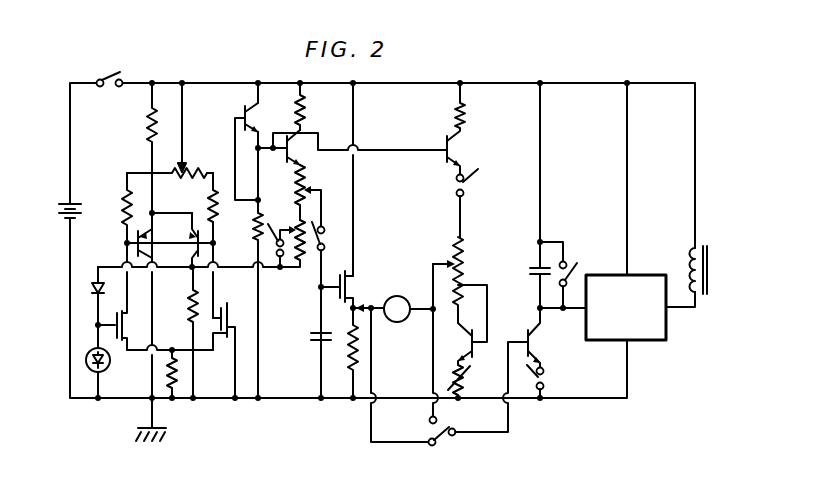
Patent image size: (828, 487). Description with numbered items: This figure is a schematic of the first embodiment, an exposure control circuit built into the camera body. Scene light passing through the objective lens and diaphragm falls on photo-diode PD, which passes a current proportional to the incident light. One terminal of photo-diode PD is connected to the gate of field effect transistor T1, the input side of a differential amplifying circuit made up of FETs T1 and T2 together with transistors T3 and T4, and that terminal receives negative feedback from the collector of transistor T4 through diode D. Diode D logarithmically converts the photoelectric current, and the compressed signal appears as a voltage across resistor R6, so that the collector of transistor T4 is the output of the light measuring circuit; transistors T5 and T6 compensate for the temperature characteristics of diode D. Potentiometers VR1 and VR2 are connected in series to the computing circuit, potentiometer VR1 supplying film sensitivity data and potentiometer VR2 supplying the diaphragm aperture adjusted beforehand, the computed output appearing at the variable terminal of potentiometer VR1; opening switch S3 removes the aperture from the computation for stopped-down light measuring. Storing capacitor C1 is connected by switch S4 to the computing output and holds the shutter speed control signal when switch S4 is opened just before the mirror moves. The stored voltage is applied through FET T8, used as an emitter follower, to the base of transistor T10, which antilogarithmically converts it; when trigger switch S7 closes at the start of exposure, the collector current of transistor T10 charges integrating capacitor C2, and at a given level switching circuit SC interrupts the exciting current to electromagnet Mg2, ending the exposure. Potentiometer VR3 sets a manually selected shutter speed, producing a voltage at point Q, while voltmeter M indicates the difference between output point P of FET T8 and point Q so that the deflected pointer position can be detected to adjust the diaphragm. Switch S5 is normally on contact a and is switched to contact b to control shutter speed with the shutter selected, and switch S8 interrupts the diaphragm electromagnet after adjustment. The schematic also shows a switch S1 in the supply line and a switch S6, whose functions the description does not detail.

The power switch S1 is at (104, 76).
The field effect transistor T1 is at (124, 330).
The field effect transistor T2 is at (224, 308).
The transistor T3 is at (158, 235).
The transistor T4 is at (194, 238).
The transistor T5 is at (243, 104).
The transistor T6 is at (284, 130).
The field effect transistor T8 is at (346, 286).
The transistor T10 is at (540, 342).
The diode D is at (95, 288).
The photo-diode PD is at (109, 367).
The resistor R6 is at (190, 303).
The potentiometer VR1 is at (322, 194).
The potentiometer VR2 is at (299, 268).
The potentiometer VR3 is at (464, 256).
The switch S3 is at (271, 226).
The switch S4 is at (326, 231).
The switch S5 is at (456, 436).
The switch S6 is at (584, 263).
The trigger switch S7 is at (544, 374).
The switch S8 is at (477, 203).
The storing capacitor C1 is at (309, 334).
The integrating capacitor C2 is at (535, 280).
The voltmeter M is at (393, 309).
The output point P is at (372, 312).
The point Q is at (432, 313).
The contact a is at (430, 444).
The contact b is at (429, 419).
The switching circuit SC is at (640, 307).
The electromagnet Mg2 is at (709, 275).